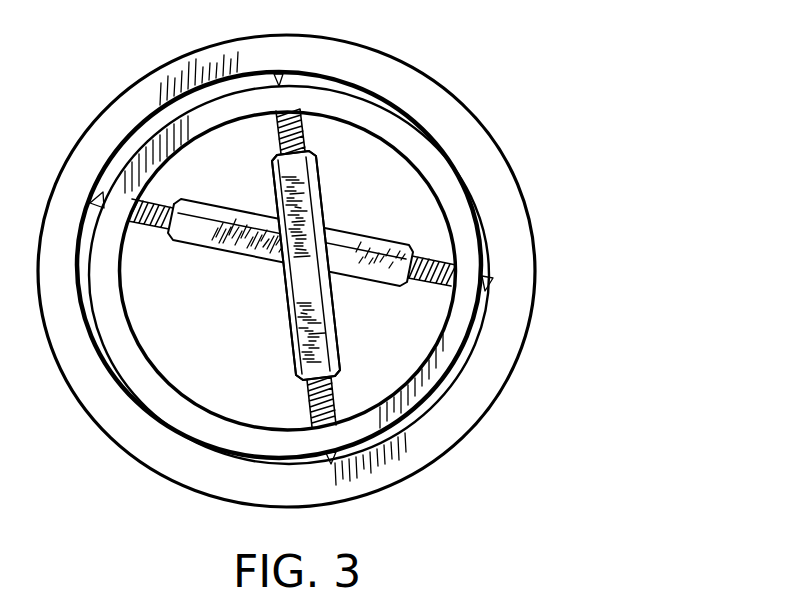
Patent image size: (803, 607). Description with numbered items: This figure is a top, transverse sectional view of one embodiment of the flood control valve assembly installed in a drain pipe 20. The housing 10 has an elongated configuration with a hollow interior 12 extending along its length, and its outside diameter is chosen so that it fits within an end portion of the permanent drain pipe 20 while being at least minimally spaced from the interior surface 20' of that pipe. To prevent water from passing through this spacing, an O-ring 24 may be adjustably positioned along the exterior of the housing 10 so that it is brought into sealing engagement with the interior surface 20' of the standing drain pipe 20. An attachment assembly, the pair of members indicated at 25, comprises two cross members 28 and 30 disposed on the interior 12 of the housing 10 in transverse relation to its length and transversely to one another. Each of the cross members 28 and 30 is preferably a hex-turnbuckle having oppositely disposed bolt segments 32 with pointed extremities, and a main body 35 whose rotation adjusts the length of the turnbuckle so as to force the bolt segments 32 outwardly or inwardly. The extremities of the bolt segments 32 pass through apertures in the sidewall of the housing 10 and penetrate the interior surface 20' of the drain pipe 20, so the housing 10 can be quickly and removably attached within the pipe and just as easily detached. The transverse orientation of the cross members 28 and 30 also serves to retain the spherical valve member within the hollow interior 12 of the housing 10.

The housing 10 is at (462, 314).
The hollow interior 12 is at (203, 328).
The drain pipe 20 is at (298, 261).
The interior surface of the drain pipe 20' is at (388, 268).
The O-ring 24 is at (490, 251).
The cross bars 25 is at (258, 186).
The cross member 28 is at (302, 187).
The cross member 30 is at (394, 265).
The bolt segments 32 is at (300, 140).
The main body 35 is at (298, 342).